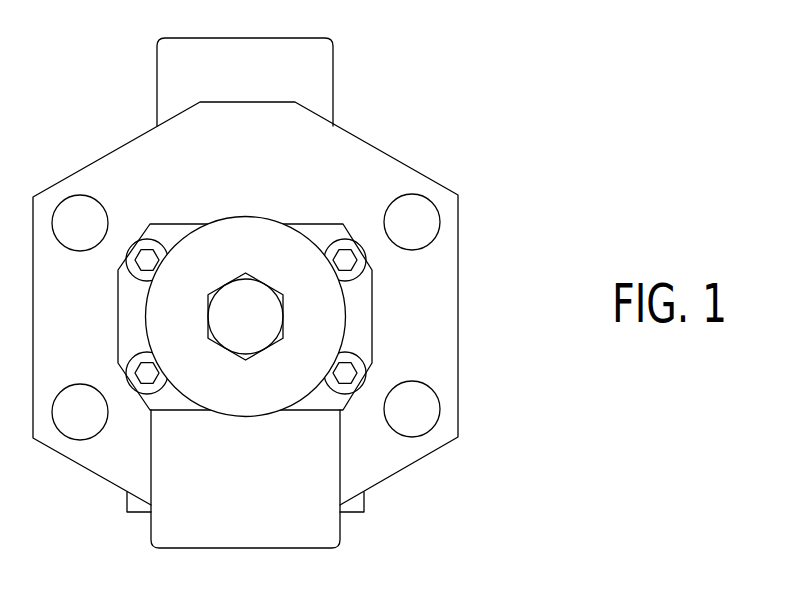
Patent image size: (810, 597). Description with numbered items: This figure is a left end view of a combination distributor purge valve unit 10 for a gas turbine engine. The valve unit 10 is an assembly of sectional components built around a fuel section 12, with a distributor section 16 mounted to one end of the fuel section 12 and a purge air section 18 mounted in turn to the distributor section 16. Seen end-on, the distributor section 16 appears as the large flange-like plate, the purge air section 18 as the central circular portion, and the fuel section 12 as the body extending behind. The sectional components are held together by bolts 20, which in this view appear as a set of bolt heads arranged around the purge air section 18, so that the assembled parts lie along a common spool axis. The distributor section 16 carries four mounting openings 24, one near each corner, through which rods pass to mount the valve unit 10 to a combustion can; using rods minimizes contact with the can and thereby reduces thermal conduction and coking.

The combination distributor purge valve unit 10 is at (441, 45).
The fuel section 12 is at (342, 97).
The distributor section 16 is at (466, 247).
The purge air section 18 is at (354, 318).
The bolts 20 is at (341, 248).
The mounting openings 24 is at (98, 200).